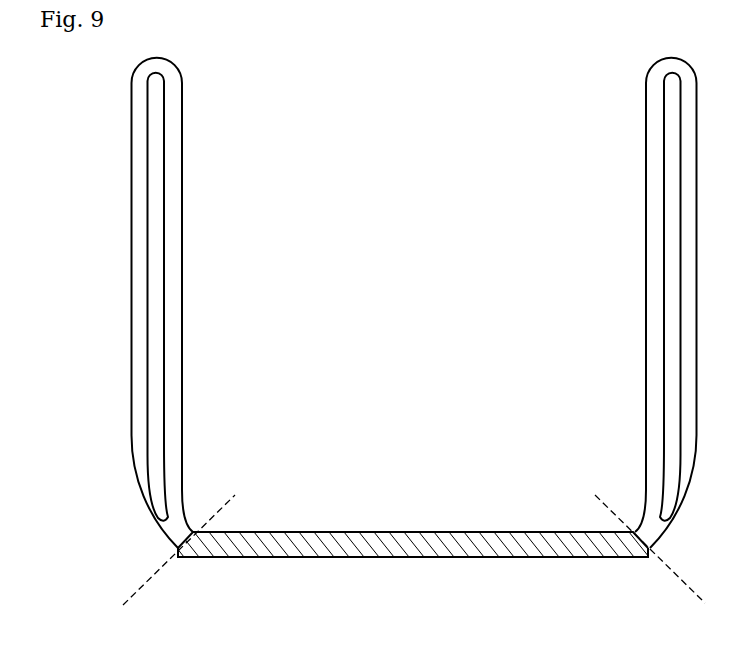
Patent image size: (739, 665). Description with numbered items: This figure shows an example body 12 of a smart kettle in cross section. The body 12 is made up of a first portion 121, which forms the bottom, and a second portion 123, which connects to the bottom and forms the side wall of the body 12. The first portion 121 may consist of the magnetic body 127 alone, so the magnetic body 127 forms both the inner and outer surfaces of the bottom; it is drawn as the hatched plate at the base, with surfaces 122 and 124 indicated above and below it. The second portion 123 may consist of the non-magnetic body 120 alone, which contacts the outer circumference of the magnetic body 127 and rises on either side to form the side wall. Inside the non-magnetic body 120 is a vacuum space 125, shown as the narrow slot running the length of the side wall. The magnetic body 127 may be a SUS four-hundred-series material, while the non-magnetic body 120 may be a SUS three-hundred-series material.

The body 12 is at (432, 72).
The non-magnetic body 120 is at (144, 272).
The first portion 121 is at (408, 470).
The upper surface of bottom portion 122 is at (265, 532).
The second portion 123 is at (612, 258).
The lower surface of bottom portion 124 is at (235, 557).
The vacuum space 125 is at (157, 338).
The magnetic body 127 is at (397, 548).